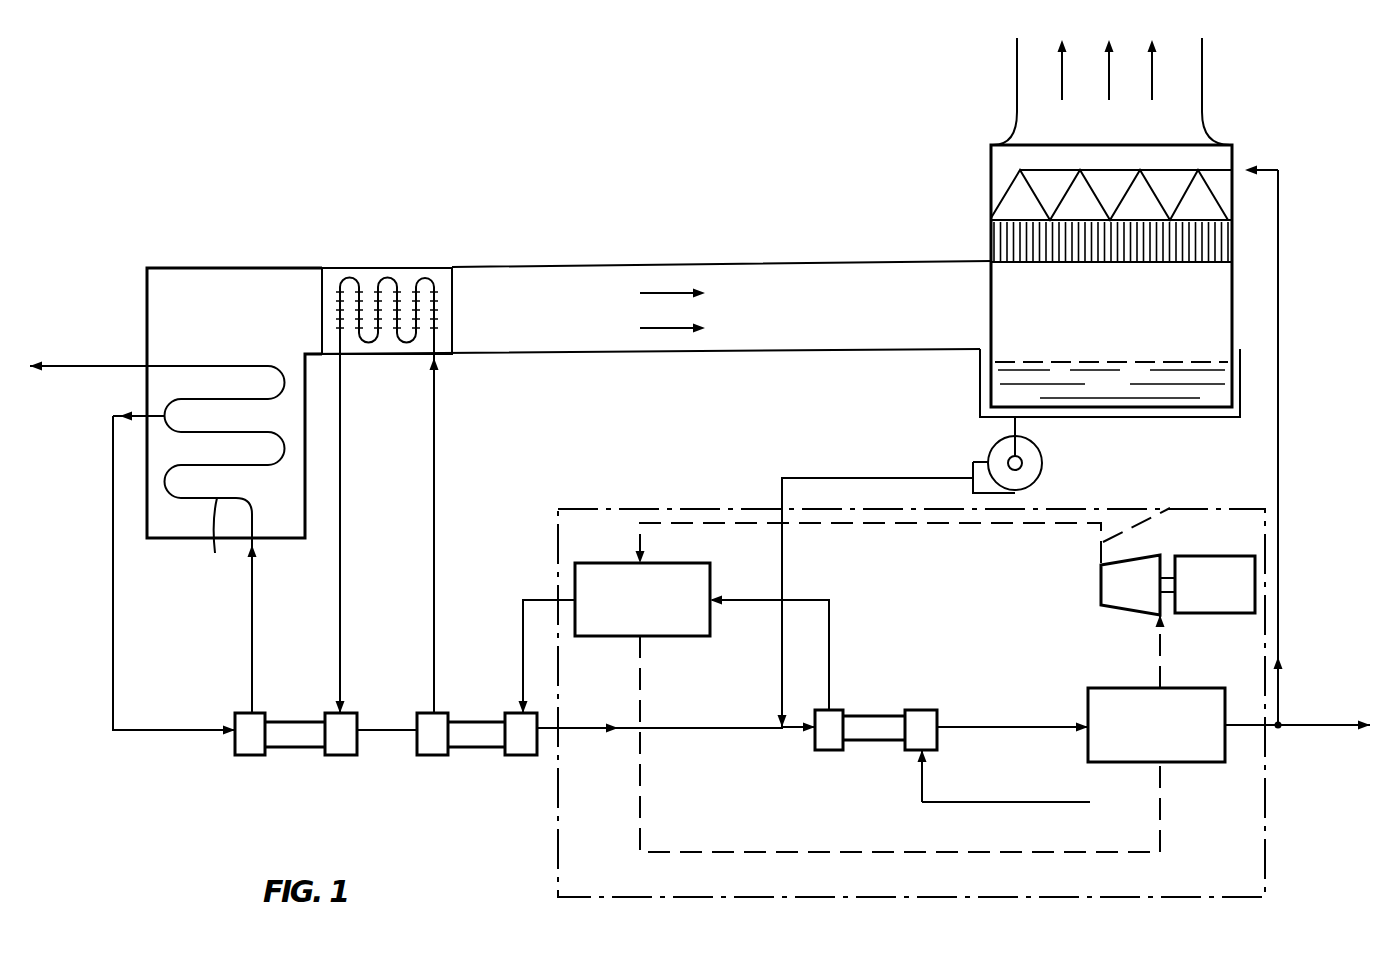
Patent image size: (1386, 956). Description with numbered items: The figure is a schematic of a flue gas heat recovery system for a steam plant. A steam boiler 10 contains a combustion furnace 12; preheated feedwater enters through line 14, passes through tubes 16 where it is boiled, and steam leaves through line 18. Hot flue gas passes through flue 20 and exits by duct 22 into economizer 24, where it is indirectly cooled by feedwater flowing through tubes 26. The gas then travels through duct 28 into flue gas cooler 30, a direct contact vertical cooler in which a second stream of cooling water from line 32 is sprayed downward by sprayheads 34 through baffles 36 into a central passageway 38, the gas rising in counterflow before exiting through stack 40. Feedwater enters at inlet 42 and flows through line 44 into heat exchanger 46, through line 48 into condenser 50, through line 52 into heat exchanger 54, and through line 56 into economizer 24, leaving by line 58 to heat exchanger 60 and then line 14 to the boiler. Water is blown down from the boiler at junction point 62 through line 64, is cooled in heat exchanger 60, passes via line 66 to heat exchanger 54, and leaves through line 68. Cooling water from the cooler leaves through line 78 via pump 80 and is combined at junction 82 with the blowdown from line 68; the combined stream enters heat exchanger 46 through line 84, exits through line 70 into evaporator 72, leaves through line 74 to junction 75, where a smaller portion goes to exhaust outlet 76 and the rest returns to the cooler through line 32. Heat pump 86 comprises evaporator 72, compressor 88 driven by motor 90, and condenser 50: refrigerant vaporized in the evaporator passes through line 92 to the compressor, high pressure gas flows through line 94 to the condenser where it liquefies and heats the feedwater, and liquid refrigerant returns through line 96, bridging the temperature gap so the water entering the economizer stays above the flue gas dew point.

The steam boiler 10 is at (147, 322).
The combustion furnace 12 is at (183, 540).
The feedwater inlet line 14 is at (254, 575).
The boiler tubes 16 is at (212, 537).
The steam outlet line 18 is at (60, 366).
The flue 20 is at (167, 268).
The duct 22 is at (305, 267).
The economizer 24 is at (435, 267).
The economizer tubes 26 is at (434, 295).
The duct 28 is at (705, 263).
The flue gas cooler 30 is at (1232, 295).
The cooling water line 32 is at (1280, 214).
The sprayheads 34 is at (1006, 184).
The baffles 36 is at (991, 245).
The central passageway 38 is at (1202, 325).
The stack 40 is at (1178, 85).
The feedwater inlet 42 is at (1085, 803).
The feedwater line 44 is at (926, 777).
The heat exchanger 46 is at (925, 710).
The feedwater line 48 is at (830, 622).
The condenser 50 is at (600, 563).
The feedwater line 52 is at (523, 617).
The heat exchanger 54 is at (478, 715).
The feedwater line 56 is at (437, 487).
The economizer outlet line 58 is at (342, 503).
The heat exchanger 60 is at (293, 715).
The junction point 62 is at (162, 414).
The blowdown line 64 is at (112, 657).
The blowdown line 66 is at (384, 727).
The blowdown line 68 is at (605, 725).
The line 70 is at (965, 727).
The evaporator 72 is at (1140, 762).
The evaporator outlet line 74 is at (1245, 730).
The junction 75 is at (1275, 735).
The exhaust outlet 76 is at (1336, 722).
The cooler outlet line 78 is at (782, 496).
The pump 80 is at (1043, 463).
The junction 82 is at (783, 735).
The line 84 is at (792, 733).
The heat pump 86 is at (558, 873).
The compressor 88 is at (1101, 583).
The motor 90 is at (1205, 556).
The refrigerant line 92 is at (1165, 667).
The refrigerant line 94 is at (1170, 508).
The refrigerant return line 96 is at (716, 853).